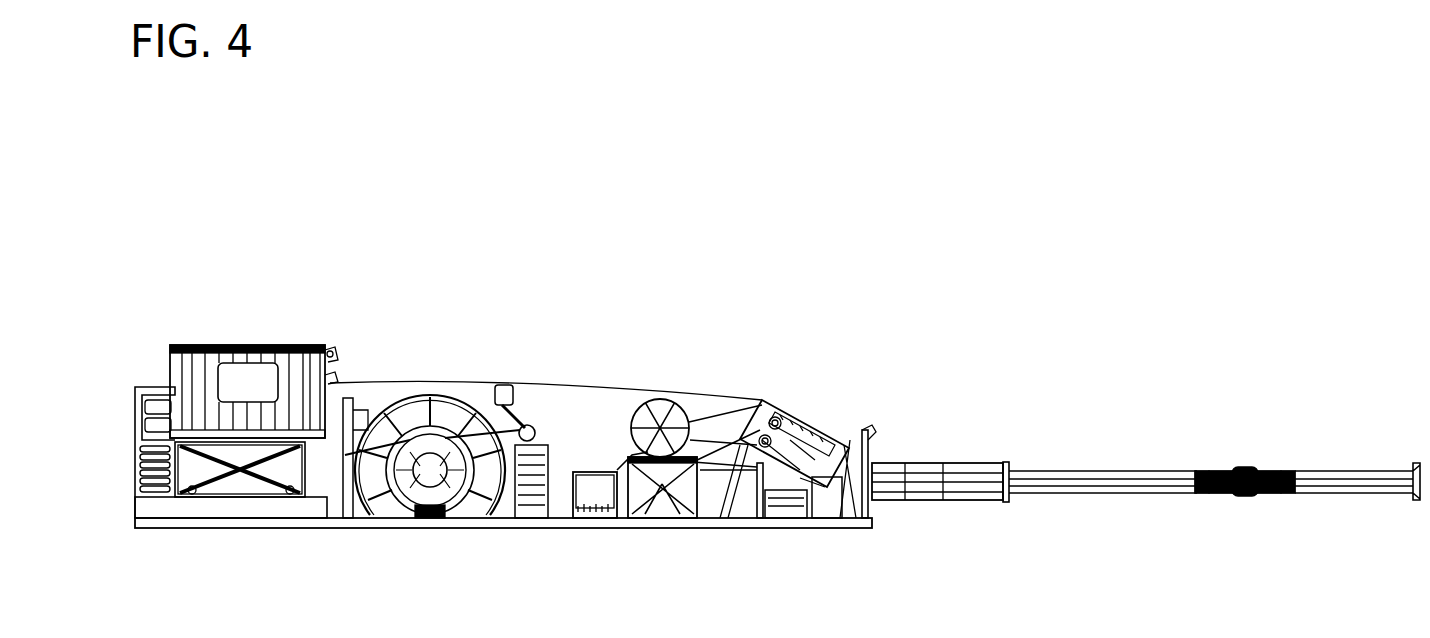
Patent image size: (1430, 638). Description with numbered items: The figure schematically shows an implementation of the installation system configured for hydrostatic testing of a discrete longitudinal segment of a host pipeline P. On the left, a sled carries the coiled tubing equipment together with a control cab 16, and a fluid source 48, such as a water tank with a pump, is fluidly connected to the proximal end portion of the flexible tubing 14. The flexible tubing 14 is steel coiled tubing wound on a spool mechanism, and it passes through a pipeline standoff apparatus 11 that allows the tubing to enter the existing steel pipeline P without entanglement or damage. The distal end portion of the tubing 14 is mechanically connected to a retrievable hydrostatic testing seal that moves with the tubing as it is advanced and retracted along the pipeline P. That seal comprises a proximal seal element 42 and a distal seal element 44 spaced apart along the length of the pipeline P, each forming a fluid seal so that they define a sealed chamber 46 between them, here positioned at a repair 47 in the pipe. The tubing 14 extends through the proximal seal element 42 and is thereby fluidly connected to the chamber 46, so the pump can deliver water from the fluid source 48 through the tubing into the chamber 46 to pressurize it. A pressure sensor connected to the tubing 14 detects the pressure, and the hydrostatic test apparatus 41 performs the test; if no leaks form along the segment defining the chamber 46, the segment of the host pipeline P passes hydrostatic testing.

The control cab 16 is at (206, 340).
The fluid source 48 is at (591, 498).
The pipeline standoff apparatus 11 is at (937, 505).
The flexible tubing 14 is at (1100, 488).
The hydrostatic test apparatus 41 is at (1255, 484).
The proximal seal element 42 is at (1197, 467).
The sealed chamber 46 is at (1227, 497).
The repair 47 is at (1244, 465).
The distal seal element 44 is at (1293, 497).
The host pipeline P is at (1360, 497).